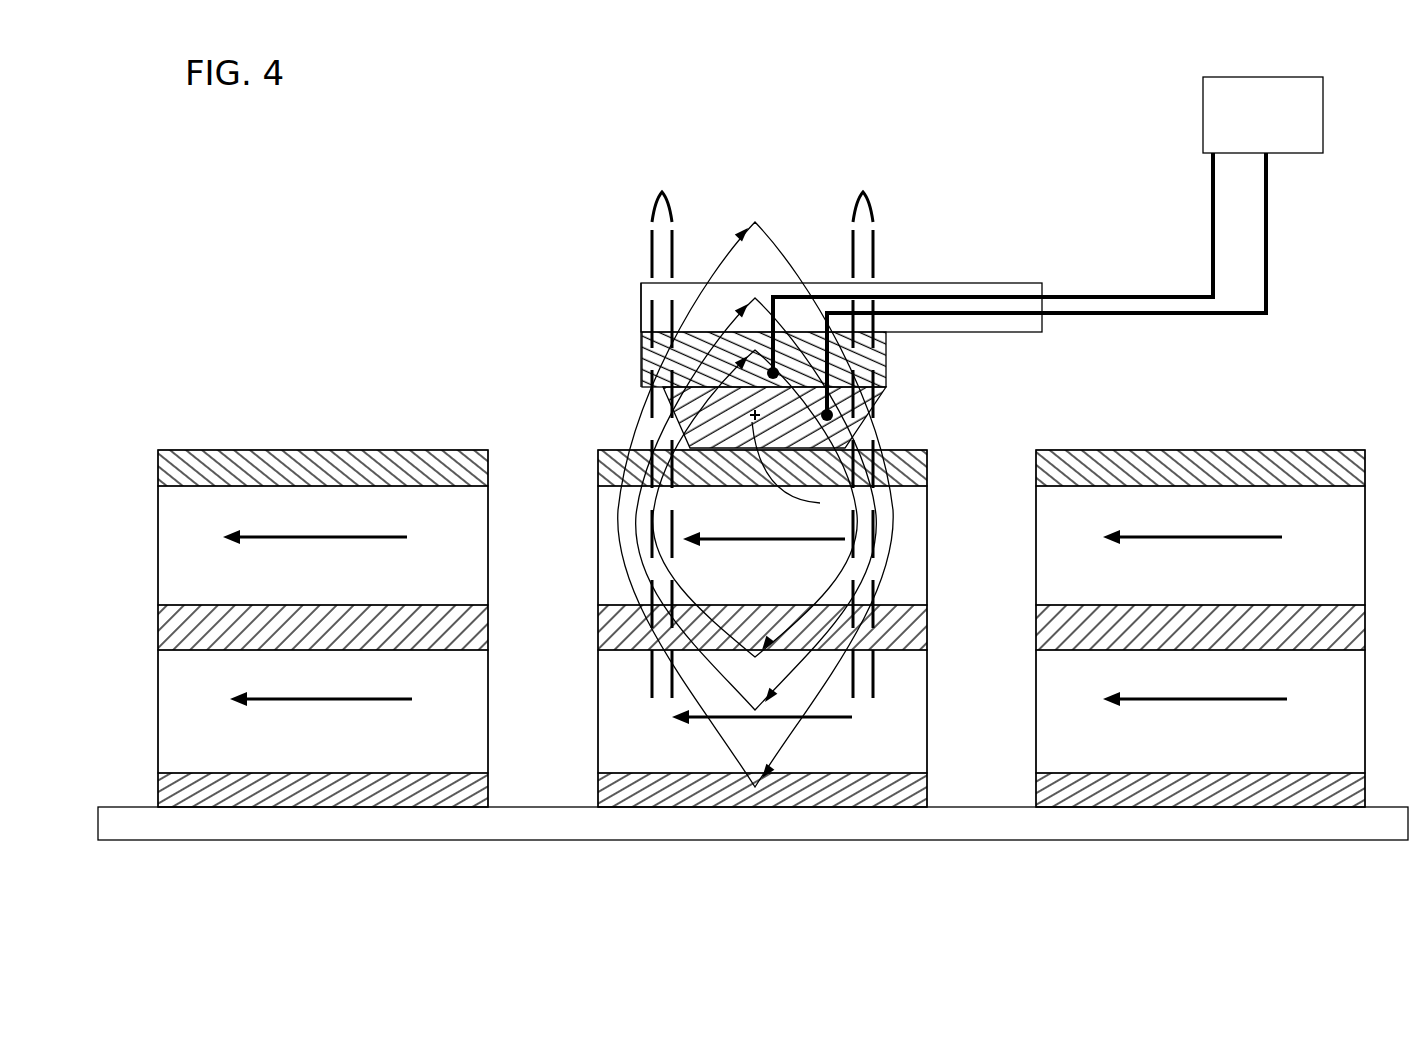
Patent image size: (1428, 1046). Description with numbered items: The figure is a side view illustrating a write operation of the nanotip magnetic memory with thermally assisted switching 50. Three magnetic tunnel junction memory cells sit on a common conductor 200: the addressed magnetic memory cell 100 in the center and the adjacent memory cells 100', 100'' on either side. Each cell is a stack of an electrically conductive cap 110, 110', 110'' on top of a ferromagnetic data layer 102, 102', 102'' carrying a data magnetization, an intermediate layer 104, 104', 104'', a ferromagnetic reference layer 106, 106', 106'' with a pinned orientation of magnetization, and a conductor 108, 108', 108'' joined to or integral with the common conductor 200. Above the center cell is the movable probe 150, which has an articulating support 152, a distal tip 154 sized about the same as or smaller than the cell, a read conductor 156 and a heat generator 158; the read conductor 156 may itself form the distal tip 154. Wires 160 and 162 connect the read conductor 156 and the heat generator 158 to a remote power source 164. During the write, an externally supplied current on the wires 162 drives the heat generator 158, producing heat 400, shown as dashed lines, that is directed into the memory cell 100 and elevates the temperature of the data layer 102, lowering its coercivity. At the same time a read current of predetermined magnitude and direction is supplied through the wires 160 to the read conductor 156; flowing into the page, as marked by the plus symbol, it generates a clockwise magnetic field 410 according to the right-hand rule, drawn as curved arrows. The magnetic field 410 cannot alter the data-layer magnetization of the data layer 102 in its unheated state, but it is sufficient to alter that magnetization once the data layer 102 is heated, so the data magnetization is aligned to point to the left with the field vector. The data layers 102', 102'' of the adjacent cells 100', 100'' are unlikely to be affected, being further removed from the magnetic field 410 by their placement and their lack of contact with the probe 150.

The nanotip magnetic memory with thermally assisted switching 50 is at (450, 166).
The magnetic memory cell 100 is at (781, 600).
The adjacent memory cell 100' is at (1190, 588).
The adjacent memory cell 100'' is at (290, 585).
The ferromagnetic data layer 102 is at (732, 540).
The data layer of adjacent memory cell 102' is at (1200, 545).
The data layer of adjacent memory cell 102'' is at (323, 545).
The intermediate layer 104 is at (730, 608).
The intermediate layer 104' is at (1172, 608).
The intermediate layer 104'' is at (290, 608).
The ferromagnetic reference layer 106 is at (762, 711).
The ferromagnetic reference layer 106' is at (1200, 711).
The ferromagnetic reference layer 106'' is at (323, 711).
The conductor 108 is at (733, 764).
The conductor 108' is at (1174, 761).
The conductor 108'' is at (290, 759).
The electrically conductive cap 110 is at (728, 440).
The electrically conductive cap 110' is at (1162, 485).
The electrically conductive cap 110'' is at (295, 439).
The movable probe 150 is at (781, 354).
The articulating support 152 is at (1005, 283).
The distal tip 154 is at (905, 382).
The read conductor 156 is at (662, 408).
The heat generator 158 is at (641, 318).
The wires 160 is at (1266, 225).
The wires 162 is at (1213, 236).
The remote power source 164 is at (1243, 111).
The common conductor 200 is at (915, 832).
The heat 400 is at (758, 431).
The magnetic field 410 is at (767, 220).